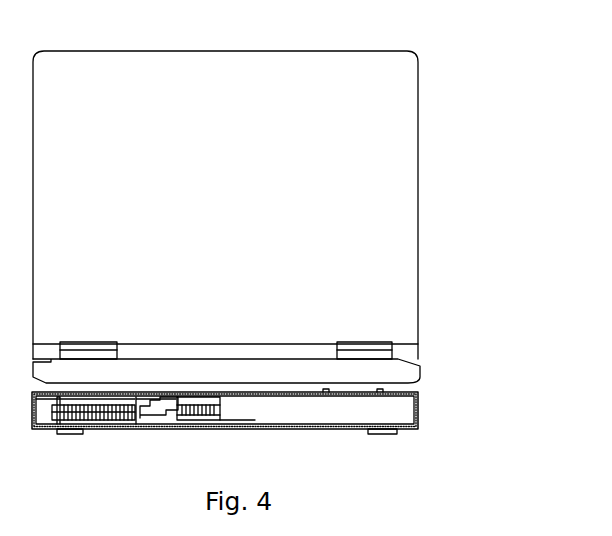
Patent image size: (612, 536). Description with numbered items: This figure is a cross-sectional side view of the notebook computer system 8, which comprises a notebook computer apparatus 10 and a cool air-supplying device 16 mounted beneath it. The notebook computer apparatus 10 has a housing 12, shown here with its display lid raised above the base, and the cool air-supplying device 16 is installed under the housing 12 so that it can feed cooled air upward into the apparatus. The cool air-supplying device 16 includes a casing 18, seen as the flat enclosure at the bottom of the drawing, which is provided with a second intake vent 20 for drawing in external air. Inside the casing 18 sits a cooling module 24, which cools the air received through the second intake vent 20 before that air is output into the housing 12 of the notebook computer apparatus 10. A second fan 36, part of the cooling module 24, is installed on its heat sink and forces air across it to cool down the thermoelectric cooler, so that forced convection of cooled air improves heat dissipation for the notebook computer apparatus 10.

The notebook computer system 8 is at (523, 92).
The notebook computer apparatus 10 is at (408, 153).
The housing 12 is at (419, 371).
The cool air-supplying device 16 is at (419, 411).
The casing 18 is at (360, 430).
The second intake vent 20 is at (211, 421).
The cooling module 24 is at (143, 420).
The second fan 36 is at (228, 421).